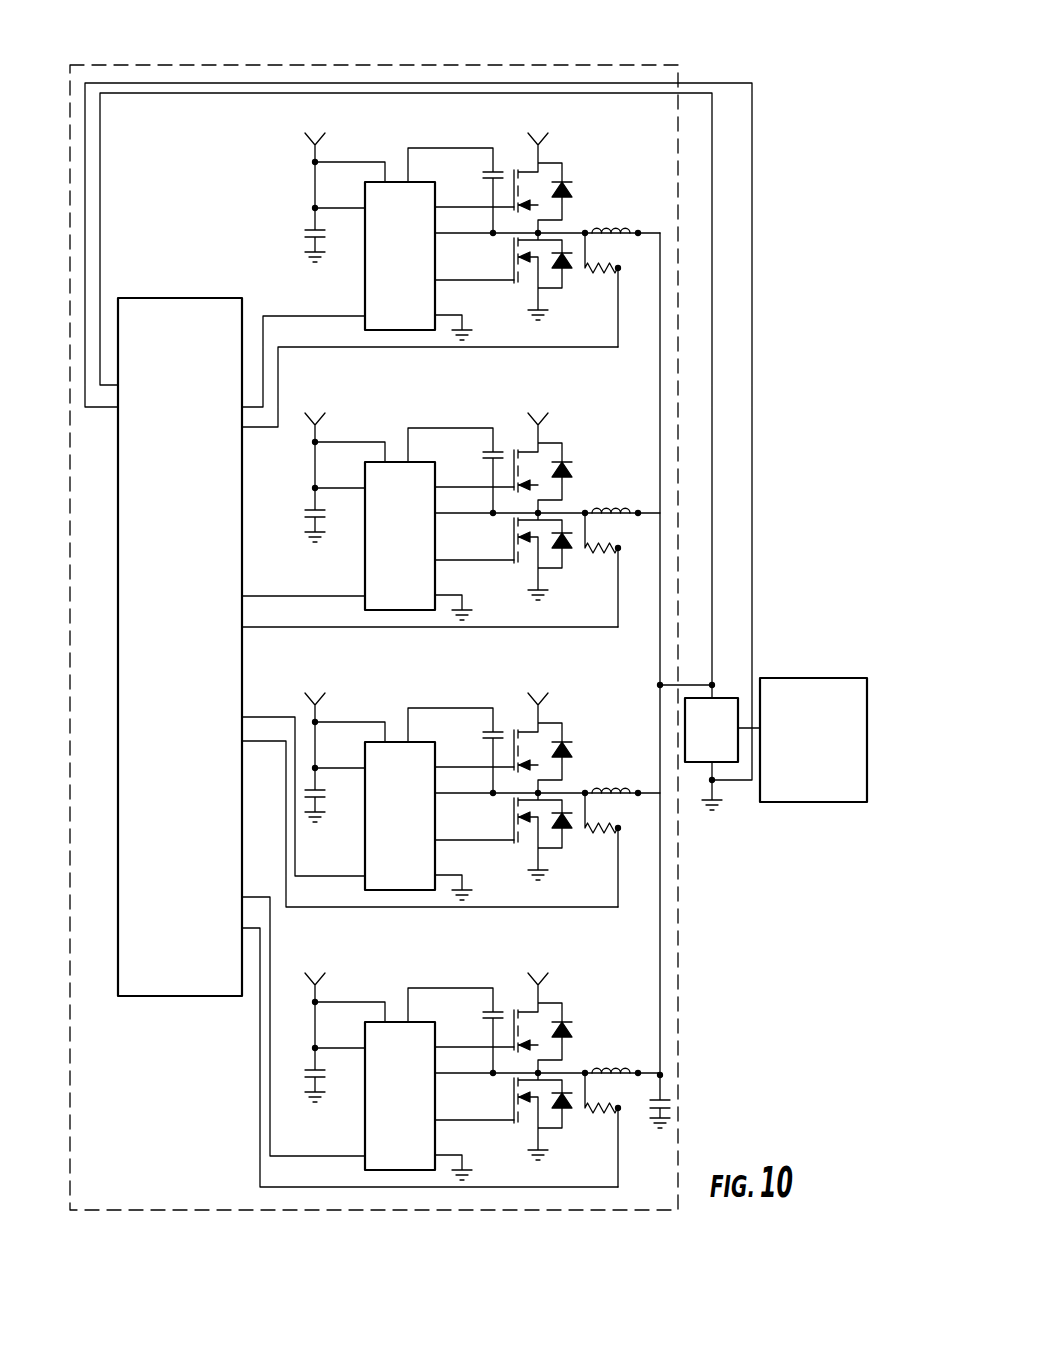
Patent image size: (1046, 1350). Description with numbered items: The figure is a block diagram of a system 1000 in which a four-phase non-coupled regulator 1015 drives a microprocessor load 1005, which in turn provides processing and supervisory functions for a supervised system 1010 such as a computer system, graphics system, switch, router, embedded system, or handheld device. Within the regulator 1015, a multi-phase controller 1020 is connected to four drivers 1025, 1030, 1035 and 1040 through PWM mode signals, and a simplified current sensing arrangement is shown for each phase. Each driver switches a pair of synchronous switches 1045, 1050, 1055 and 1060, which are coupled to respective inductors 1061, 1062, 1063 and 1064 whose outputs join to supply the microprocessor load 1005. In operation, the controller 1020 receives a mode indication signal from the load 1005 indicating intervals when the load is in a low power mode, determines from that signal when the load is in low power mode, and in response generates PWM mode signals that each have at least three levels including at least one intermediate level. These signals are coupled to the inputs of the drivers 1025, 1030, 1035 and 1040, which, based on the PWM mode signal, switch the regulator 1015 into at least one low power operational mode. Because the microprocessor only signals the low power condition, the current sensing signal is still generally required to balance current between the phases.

The system 1000 is at (322, 1247).
The microprocessor load 1005 is at (727, 762).
The supervised system 1010 is at (795, 678).
The non-coupled regulator 1015 is at (647, 65).
The controller 1020 is at (180, 298).
The driver 1025 is at (417, 238).
The driver 1030 is at (400, 536).
The driver 1035 is at (400, 816).
The driver 1040 is at (400, 1096).
The synchronous switches 1045 is at (587, 191).
The synchronous switches 1050 is at (570, 493).
The synchronous switches 1055 is at (570, 773).
The synchronous switches 1060 is at (570, 1053).
The inductor 1061 is at (617, 228).
The inductor 1062 is at (623, 481).
The inductor 1063 is at (623, 761).
The inductor 1064 is at (623, 1041).